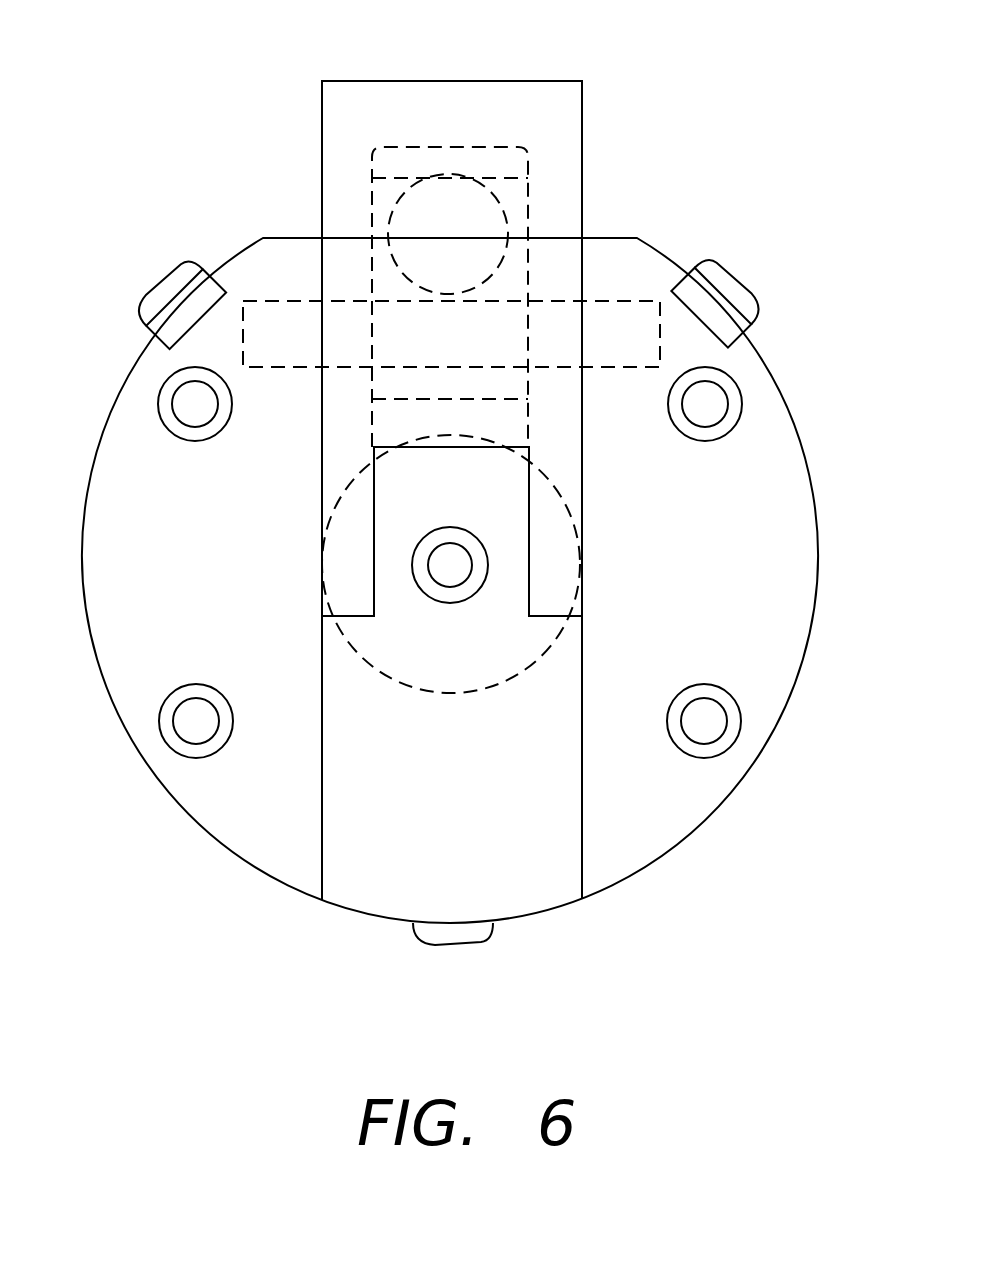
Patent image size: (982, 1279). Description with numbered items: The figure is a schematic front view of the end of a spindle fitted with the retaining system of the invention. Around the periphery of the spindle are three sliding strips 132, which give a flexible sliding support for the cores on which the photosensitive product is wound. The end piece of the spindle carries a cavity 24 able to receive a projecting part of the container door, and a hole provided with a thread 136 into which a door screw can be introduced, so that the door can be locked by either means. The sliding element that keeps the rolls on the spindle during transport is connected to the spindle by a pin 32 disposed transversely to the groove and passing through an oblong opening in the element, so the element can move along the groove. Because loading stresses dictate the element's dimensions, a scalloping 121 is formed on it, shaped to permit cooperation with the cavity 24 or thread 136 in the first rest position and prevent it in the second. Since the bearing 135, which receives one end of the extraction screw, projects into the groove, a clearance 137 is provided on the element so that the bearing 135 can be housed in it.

The cavity 24 is at (480, 655).
The pin 32 is at (293, 317).
The scalloping 121 is at (386, 477).
The sliding strips 132 is at (163, 287).
The bearing 135 is at (503, 208).
The thread 136 is at (450, 560).
The clearance 137 is at (448, 163).